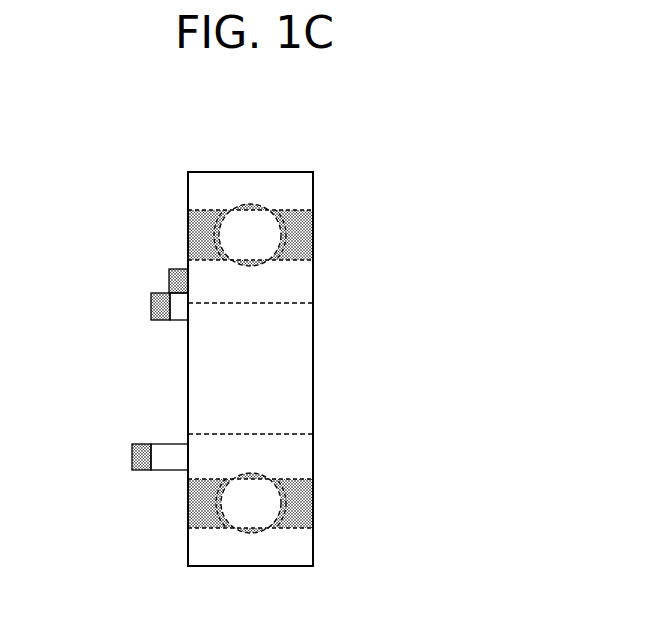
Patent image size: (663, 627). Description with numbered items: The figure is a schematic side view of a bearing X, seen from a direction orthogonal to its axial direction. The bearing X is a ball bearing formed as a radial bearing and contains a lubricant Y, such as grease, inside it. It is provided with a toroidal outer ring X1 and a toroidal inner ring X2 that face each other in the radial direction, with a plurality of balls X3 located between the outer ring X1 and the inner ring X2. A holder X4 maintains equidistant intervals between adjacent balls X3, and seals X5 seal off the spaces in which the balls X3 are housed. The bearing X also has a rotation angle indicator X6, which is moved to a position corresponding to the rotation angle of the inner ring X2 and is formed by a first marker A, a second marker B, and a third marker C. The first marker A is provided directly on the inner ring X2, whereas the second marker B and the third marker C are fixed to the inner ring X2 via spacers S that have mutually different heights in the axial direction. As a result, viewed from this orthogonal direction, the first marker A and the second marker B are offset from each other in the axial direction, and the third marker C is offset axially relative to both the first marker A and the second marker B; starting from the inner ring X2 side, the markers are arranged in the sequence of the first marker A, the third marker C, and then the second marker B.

The bearing X is at (366, 152).
The outer ring X1 is at (284, 181).
The inner ring X2 is at (305, 290).
The balls X3 is at (265, 237).
The holder X4 is at (313, 218).
The seals X5 is at (190, 236).
The rotation angle indicator X6 is at (110, 488).
The lubricant Y is at (207, 216).
The first marker A is at (178, 280).
The second marker B is at (140, 455).
The third marker C is at (158, 305).
The spacers S is at (178, 310).